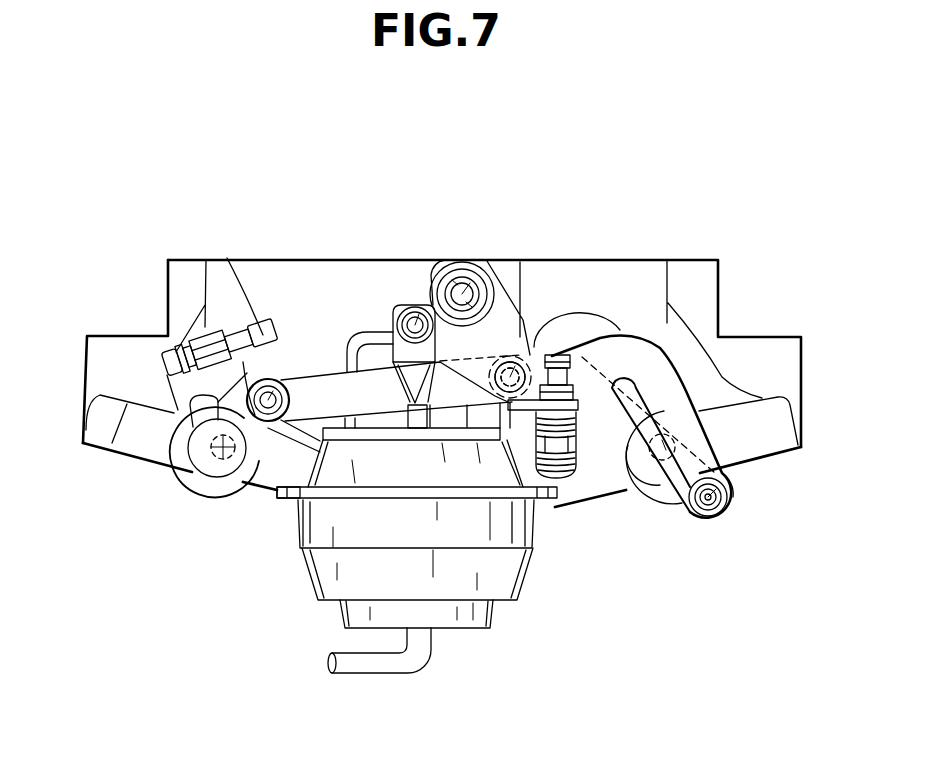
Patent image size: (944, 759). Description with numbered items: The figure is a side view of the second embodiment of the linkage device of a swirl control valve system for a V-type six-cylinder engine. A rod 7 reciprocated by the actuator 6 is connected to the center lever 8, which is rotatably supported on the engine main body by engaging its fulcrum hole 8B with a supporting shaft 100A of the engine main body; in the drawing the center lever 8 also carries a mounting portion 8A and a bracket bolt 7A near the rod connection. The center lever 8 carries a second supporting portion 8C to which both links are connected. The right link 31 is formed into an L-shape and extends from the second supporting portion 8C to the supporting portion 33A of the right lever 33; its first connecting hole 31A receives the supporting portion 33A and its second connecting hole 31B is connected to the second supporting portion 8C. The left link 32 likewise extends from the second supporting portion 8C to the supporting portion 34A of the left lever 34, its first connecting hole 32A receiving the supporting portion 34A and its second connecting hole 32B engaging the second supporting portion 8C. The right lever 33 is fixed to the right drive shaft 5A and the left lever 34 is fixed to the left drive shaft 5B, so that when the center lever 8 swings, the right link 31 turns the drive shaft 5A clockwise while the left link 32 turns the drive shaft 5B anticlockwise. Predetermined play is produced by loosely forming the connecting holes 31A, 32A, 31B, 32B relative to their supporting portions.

The first connecting hole 32A is at (248, 325).
The left link 32 is at (308, 362).
The rod 7 is at (383, 340).
The mounting portion 8A is at (389, 305).
The bracket bolt 7A is at (413, 325).
The fulcrum hole 8B is at (462, 262).
The supporting shaft 100A is at (503, 320).
The center lever 8 is at (527, 330).
The second supporting portion 8C is at (545, 322).
The right link 31 is at (652, 357).
The first connecting hole 31A is at (735, 497).
The supporting portion 33A is at (733, 505).
The right lever 33 is at (623, 405).
The drive shaft 5A is at (660, 457).
The second connecting hole 31B is at (515, 400).
The second connecting hole 32B is at (547, 633).
The actuator 6 is at (463, 628).
The supporting portion 34A is at (292, 488).
The left lever 34 is at (217, 463).
The drive shaft 5B is at (217, 447).